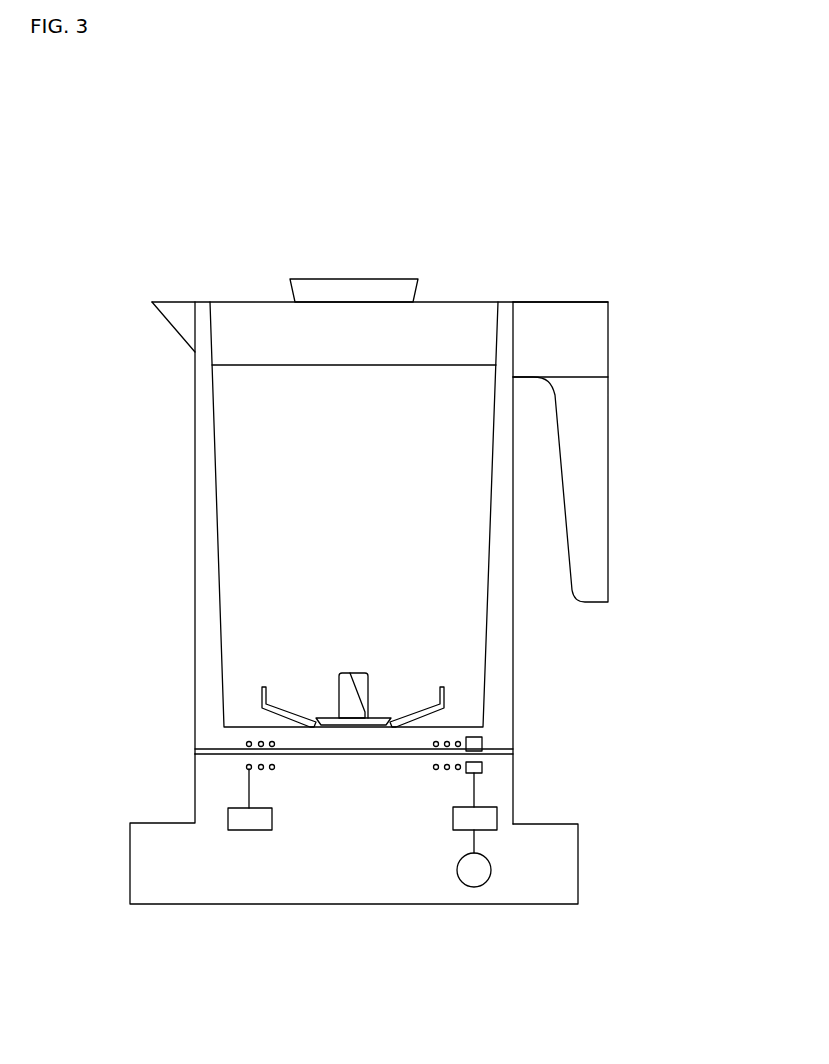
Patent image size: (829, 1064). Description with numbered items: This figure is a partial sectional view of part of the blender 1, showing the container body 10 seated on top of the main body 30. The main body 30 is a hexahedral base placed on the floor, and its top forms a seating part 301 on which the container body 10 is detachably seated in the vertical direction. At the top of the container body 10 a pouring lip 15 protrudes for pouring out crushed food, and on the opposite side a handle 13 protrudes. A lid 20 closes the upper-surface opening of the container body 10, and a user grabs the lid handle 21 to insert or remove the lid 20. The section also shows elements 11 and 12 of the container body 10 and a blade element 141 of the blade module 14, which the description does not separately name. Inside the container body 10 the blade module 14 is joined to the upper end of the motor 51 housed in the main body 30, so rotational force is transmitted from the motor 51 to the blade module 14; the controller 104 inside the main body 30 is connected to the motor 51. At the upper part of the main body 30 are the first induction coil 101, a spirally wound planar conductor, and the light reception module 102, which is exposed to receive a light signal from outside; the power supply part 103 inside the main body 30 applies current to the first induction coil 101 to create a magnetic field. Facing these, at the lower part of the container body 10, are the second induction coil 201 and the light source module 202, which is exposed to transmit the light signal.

The blender 1 is at (399, 148).
The container body 10 is at (67, 422).
The outer container 11 is at (195, 442).
The inner container 12 is at (215, 480).
The handle 13 is at (615, 415).
The blade module 14 is at (305, 676).
The blade 141 is at (448, 702).
The pouring lip 15 is at (170, 303).
The lid 20 is at (433, 264).
The lid handle 21 is at (351, 288).
The main body 30 is at (590, 846).
The seating part 301 is at (182, 786).
The first induction coil 101 is at (246, 769).
The light reception module 102 is at (484, 766).
The power supply part 103 is at (250, 832).
The controller 104 is at (453, 818).
The second induction coil 201 is at (245, 745).
The light source module 202 is at (484, 745).
The motor 51 is at (457, 870).